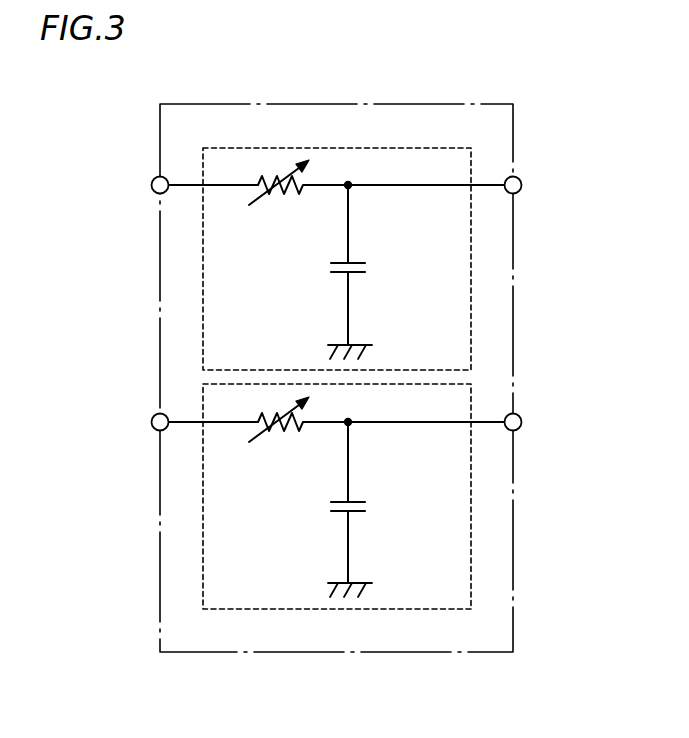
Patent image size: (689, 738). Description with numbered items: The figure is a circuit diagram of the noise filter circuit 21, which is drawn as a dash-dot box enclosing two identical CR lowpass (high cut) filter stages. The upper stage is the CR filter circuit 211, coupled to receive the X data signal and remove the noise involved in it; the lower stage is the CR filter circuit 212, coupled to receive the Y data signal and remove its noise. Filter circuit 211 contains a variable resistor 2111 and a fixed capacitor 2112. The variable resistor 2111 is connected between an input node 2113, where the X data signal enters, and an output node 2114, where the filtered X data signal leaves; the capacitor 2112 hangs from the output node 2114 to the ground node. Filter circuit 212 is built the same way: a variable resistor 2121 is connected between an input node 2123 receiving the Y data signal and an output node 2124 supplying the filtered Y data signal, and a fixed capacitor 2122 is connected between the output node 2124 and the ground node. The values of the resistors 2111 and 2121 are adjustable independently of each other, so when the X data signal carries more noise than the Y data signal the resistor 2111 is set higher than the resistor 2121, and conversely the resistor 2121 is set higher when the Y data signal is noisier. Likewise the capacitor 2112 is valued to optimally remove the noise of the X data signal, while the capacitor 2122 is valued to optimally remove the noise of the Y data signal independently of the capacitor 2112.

The noise filter circuit 21 is at (422, 102).
The CR filter circuit 211 is at (471, 268).
The CR filter circuit 212 is at (471, 505).
The variable resistor 2111 is at (278, 201).
The fixed capacitor 2112 is at (368, 268).
The input node 2113 is at (153, 193).
The output node 2114 is at (519, 192).
The variable resistor 2121 is at (278, 438).
The fixed capacitor 2122 is at (368, 506).
The input node 2123 is at (154, 430).
The output node 2124 is at (519, 429).